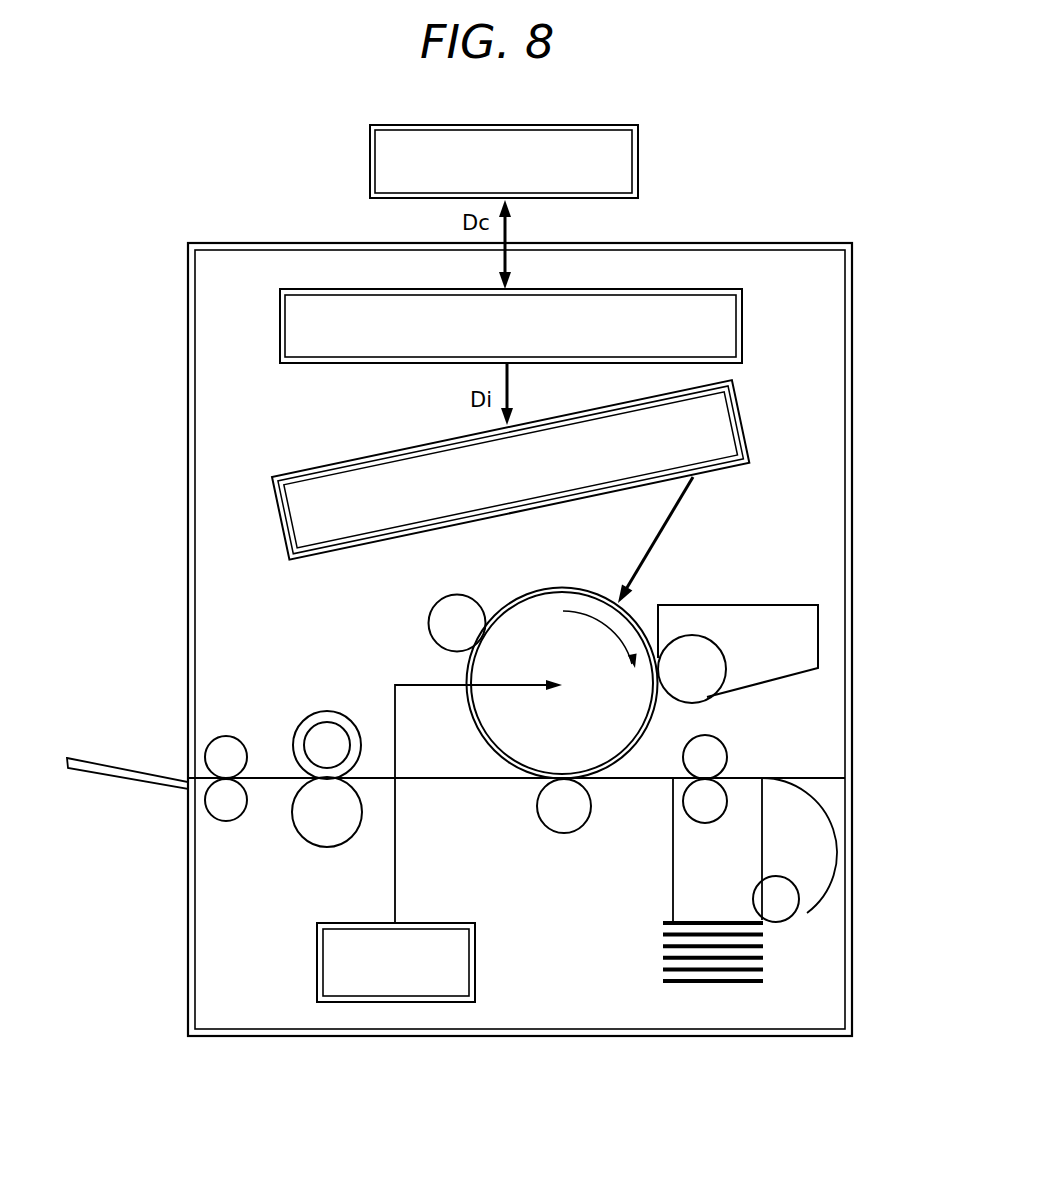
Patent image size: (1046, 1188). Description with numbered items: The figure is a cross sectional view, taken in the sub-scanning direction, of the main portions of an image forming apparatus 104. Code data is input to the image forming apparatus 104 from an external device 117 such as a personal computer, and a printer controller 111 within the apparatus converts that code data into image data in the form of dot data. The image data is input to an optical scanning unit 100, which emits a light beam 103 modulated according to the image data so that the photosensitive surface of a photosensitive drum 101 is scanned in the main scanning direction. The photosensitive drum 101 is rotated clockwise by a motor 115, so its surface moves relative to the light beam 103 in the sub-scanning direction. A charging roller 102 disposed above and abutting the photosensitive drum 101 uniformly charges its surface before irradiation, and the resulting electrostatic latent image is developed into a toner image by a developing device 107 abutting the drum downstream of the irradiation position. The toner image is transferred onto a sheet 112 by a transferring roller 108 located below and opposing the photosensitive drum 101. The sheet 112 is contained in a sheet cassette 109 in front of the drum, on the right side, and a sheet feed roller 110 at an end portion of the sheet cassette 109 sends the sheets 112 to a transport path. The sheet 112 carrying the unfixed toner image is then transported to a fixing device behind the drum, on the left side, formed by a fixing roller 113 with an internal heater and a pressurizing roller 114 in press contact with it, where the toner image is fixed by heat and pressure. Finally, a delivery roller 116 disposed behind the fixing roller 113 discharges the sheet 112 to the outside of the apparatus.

The optical scanning unit 100 is at (366, 456).
The photosensitive drum 101 is at (642, 708).
The charging roller 102 is at (456, 603).
The light beam 103 is at (663, 528).
The image forming apparatus 104 is at (806, 226).
The developing device 107 is at (818, 620).
The transferring roller 108 is at (570, 832).
The sheet cassette 109 is at (652, 961).
The sheet feed roller 110 is at (773, 898).
The printer controller 111 is at (742, 310).
The sheet 112 is at (442, 780).
The fixing roller 113 is at (319, 737).
The pressurizing roller 114 is at (306, 823).
The motor 115 is at (317, 961).
The delivery roller 116 is at (234, 750).
The external device 117 is at (640, 143).